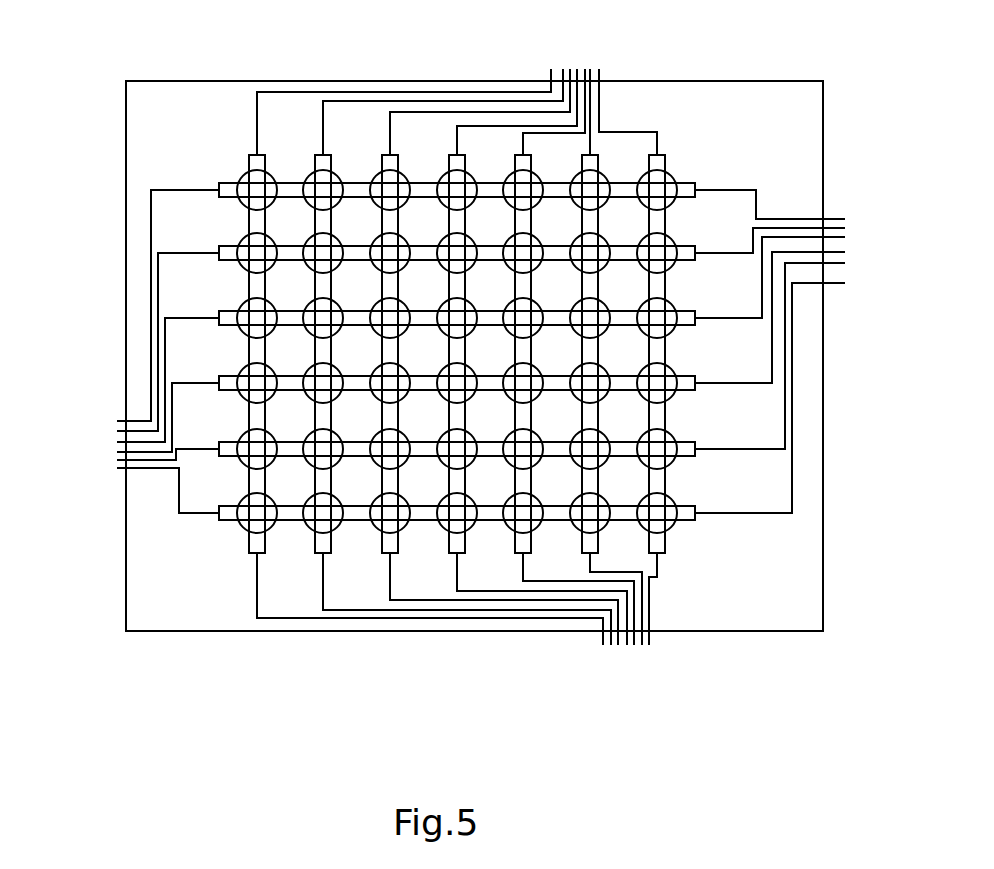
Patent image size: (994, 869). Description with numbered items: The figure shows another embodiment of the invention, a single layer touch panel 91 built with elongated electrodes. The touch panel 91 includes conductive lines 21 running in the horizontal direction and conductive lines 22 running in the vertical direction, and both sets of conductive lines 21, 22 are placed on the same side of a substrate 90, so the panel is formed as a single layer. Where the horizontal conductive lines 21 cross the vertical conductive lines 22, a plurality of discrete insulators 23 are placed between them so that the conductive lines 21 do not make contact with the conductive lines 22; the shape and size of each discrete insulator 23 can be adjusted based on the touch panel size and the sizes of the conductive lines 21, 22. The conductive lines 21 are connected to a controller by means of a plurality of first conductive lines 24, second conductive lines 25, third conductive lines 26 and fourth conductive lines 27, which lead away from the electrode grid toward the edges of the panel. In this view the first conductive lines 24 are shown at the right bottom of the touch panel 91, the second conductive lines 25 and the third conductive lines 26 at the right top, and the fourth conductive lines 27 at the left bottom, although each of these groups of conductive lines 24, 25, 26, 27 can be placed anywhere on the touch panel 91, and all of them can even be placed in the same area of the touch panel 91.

The substrate 90 is at (223, 128).
The touch panel 91 is at (138, 252).
The conductive lines 21 is at (230, 182).
The conductive lines 22 is at (667, 222).
The discrete insulators 23 is at (243, 523).
The first conductive lines 24 is at (670, 650).
The second conductive lines 25 is at (847, 210).
The third conductive lines 26 is at (617, 62).
The fourth conductive lines 27 is at (115, 410).